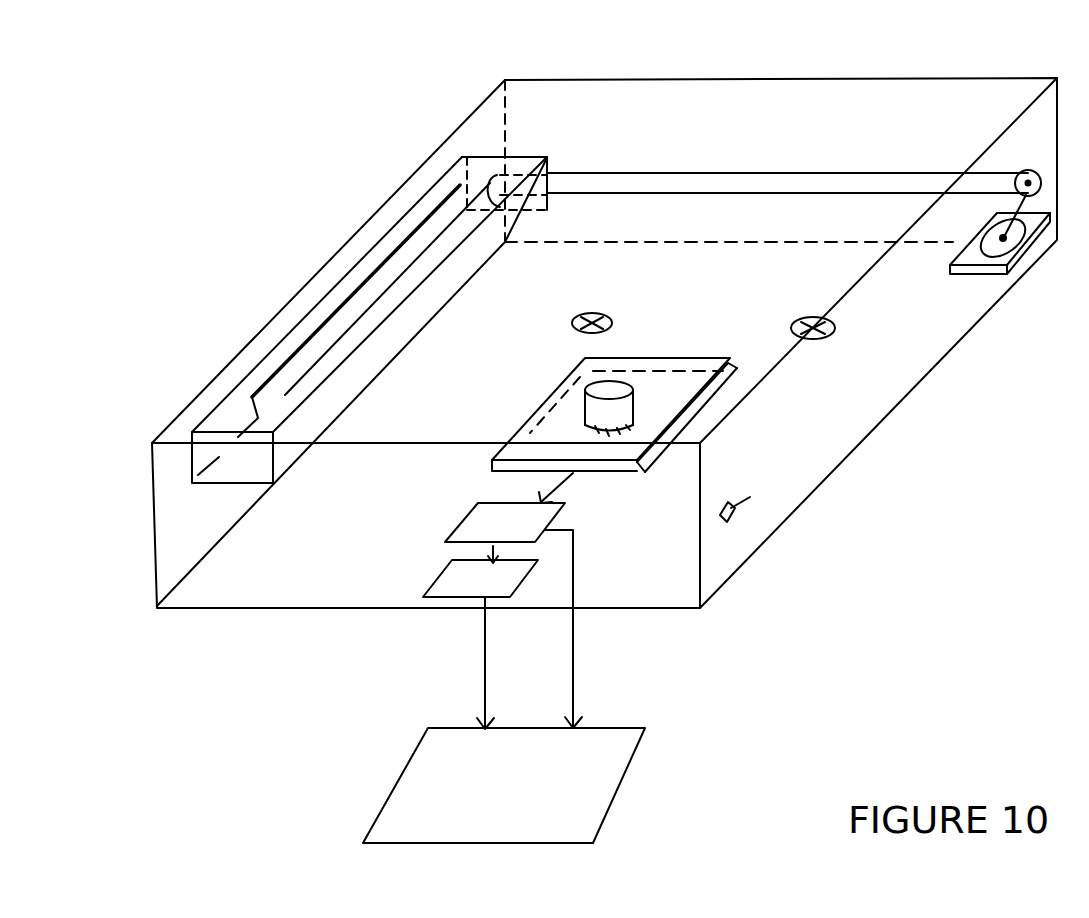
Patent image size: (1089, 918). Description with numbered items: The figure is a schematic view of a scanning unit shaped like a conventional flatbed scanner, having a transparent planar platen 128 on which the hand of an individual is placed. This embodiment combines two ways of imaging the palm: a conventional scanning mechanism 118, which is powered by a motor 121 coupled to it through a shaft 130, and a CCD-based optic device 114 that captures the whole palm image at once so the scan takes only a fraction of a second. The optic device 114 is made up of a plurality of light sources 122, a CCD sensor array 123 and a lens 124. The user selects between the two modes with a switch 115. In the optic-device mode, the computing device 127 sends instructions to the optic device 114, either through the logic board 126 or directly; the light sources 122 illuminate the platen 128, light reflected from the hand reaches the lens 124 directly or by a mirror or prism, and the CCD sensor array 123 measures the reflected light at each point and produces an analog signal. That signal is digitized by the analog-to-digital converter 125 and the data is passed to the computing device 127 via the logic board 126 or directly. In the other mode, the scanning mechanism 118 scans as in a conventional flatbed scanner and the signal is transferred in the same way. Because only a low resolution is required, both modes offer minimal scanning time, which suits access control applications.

The CCD-based optic device 114 is at (710, 397).
The switch 115 is at (727, 523).
The scanning mechanism 118 is at (443, 175).
The motor 121 is at (1023, 263).
The light sources 122 is at (612, 320).
The CCD sensor array 123 is at (673, 352).
The lens 124 is at (582, 390).
The analog-to-digital converter 125 is at (462, 523).
The logic board 126 is at (432, 583).
The computing device 127 is at (627, 780).
The transparent planar platen 128 is at (740, 102).
The shaft 130 is at (820, 170).